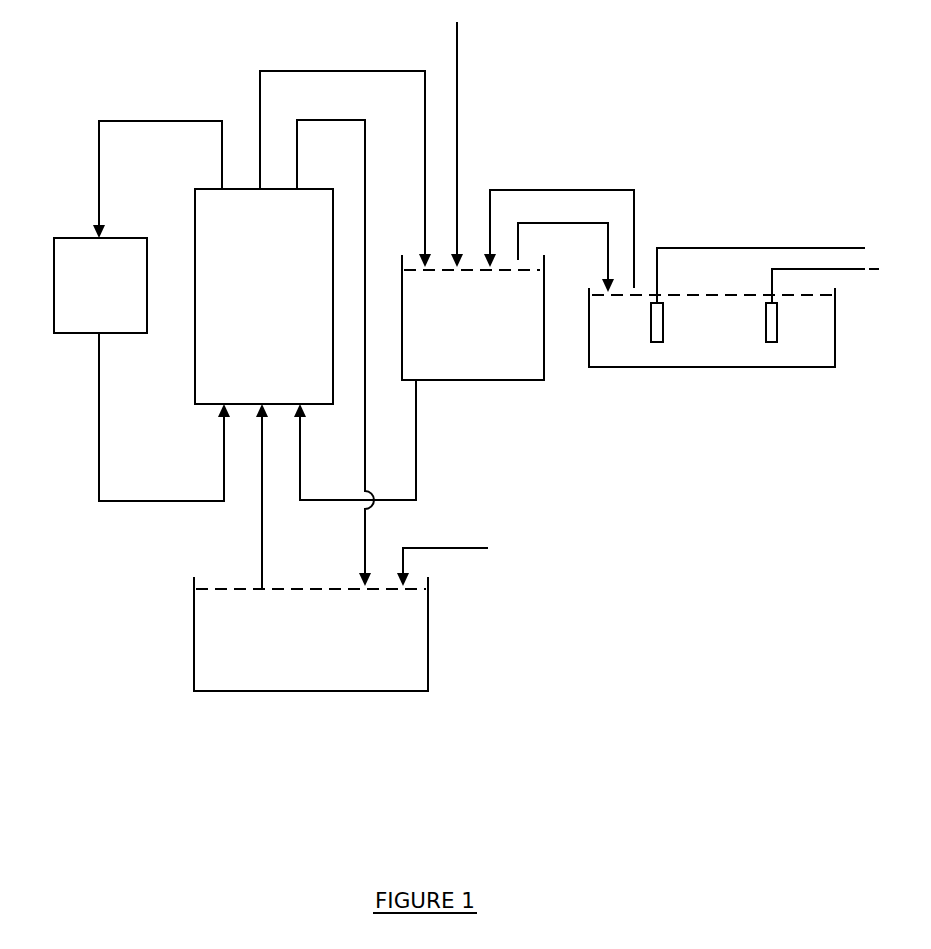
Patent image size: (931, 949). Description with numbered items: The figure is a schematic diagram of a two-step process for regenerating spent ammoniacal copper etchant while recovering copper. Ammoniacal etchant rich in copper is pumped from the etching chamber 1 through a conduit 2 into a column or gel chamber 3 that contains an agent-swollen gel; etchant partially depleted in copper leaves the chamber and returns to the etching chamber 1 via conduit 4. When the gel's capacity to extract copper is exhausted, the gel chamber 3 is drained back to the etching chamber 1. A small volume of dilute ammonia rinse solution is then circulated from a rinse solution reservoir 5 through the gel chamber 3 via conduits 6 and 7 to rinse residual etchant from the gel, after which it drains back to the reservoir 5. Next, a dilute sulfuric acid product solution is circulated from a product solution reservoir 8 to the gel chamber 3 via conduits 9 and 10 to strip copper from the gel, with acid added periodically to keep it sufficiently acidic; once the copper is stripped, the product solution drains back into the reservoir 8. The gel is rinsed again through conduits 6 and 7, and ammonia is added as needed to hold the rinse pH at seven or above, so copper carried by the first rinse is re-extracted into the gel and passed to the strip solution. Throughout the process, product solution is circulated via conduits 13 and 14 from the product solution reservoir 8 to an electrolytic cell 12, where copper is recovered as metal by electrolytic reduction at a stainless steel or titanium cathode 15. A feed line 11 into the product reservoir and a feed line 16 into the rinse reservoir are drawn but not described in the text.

The etching chamber 1 is at (72, 318).
The conduit 2 is at (125, 510).
The gel chamber 3 is at (203, 255).
The conduit 4 is at (192, 121).
The rinse solution reservoir 5 is at (232, 682).
The conduit 6 is at (259, 530).
The conduit 7 is at (372, 163).
The product solution reservoir 8 is at (500, 370).
The conduit 9 is at (419, 458).
The conduit 10 is at (360, 71).
The feed line 11 is at (461, 70).
The electrolytic cell 12 is at (737, 360).
The conduit 13 is at (592, 222).
The conduit 14 is at (542, 187).
The cathode 15 is at (774, 316).
The feed line 16 is at (490, 560).